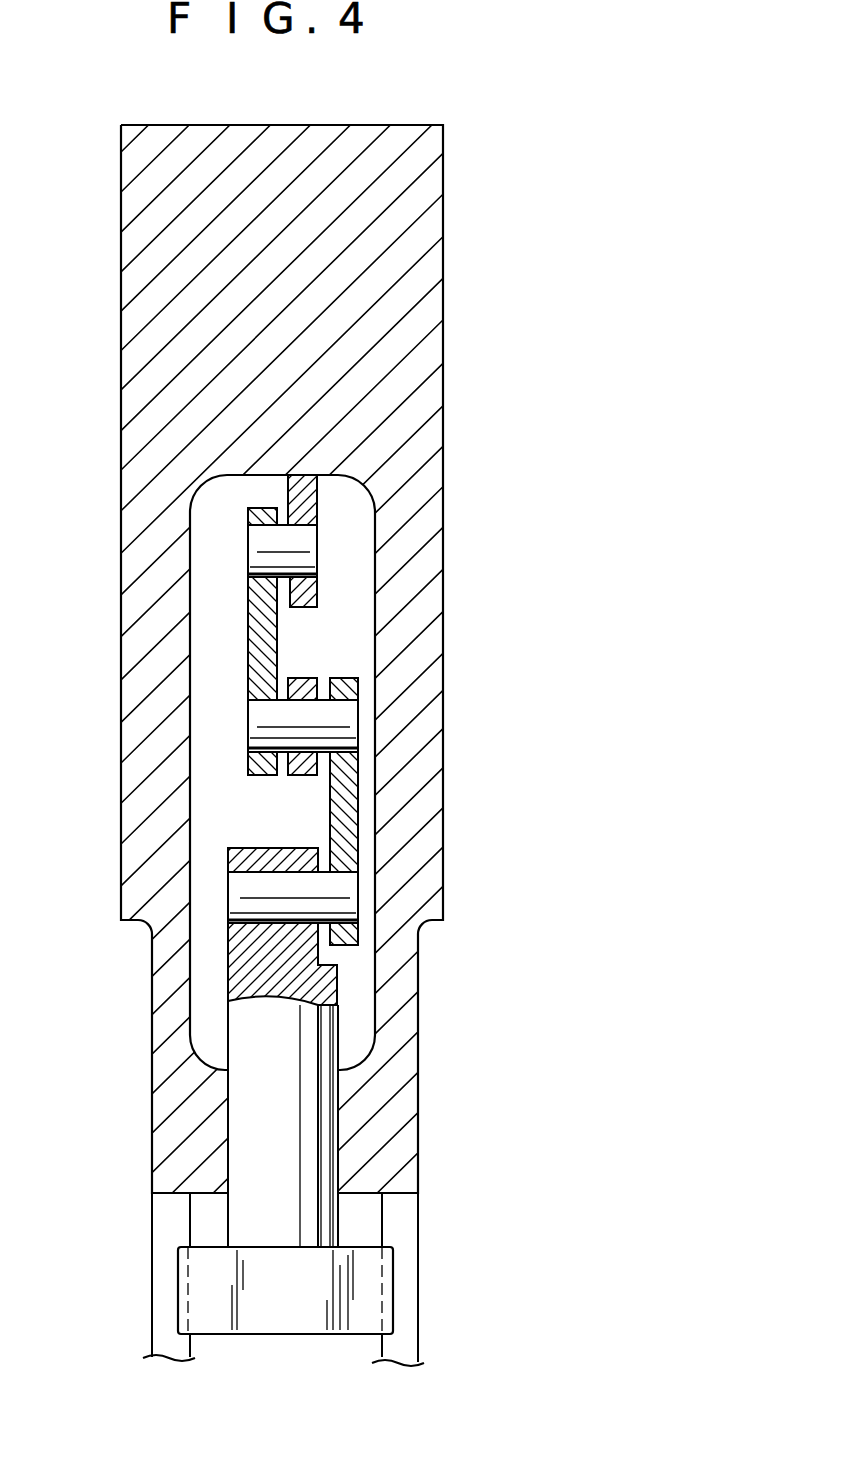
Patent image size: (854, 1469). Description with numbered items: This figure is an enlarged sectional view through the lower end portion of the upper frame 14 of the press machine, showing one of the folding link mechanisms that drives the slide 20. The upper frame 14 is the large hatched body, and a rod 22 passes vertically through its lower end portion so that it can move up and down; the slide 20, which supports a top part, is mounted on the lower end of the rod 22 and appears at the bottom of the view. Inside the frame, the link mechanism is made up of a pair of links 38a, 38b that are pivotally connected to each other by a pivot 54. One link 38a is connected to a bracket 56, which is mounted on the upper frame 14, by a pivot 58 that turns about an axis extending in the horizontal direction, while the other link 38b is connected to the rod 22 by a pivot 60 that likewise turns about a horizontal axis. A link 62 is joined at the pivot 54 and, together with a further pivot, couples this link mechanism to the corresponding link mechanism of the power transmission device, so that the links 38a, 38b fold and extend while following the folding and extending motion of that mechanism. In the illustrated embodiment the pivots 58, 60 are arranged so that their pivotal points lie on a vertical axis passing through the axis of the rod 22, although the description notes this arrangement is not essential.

The upper frame 14 is at (407, 147).
The slide 20 is at (277, 1317).
The rod 22 is at (323, 1113).
The link 38a is at (252, 632).
The link 38b is at (353, 793).
The pivot 54 is at (350, 723).
The bracket 56 is at (342, 472).
The pivot 58 is at (307, 550).
The pivot 60 is at (352, 890).
The link 62 is at (307, 688).